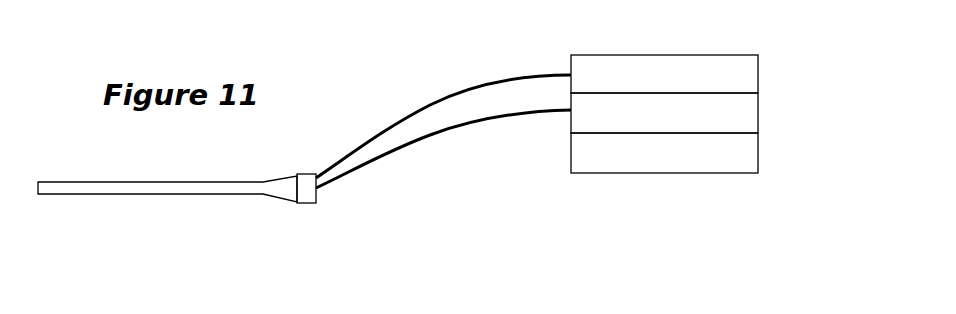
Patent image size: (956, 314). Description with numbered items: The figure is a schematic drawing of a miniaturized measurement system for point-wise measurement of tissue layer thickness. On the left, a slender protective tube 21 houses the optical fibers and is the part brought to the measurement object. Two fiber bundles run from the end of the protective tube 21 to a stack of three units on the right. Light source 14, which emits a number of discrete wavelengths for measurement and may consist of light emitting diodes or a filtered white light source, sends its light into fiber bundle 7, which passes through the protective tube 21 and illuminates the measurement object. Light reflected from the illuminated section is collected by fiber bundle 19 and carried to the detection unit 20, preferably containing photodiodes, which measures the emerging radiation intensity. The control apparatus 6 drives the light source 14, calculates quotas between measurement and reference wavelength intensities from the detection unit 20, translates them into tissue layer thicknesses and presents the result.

The protective tube 21 is at (167, 190).
The fiber bundle 1 7 is at (425, 112).
The fiber bundle 3 19 is at (372, 162).
The light source 2 14 is at (753, 77).
The detection unit 20 is at (750, 114).
The control apparatus 6 is at (757, 153).